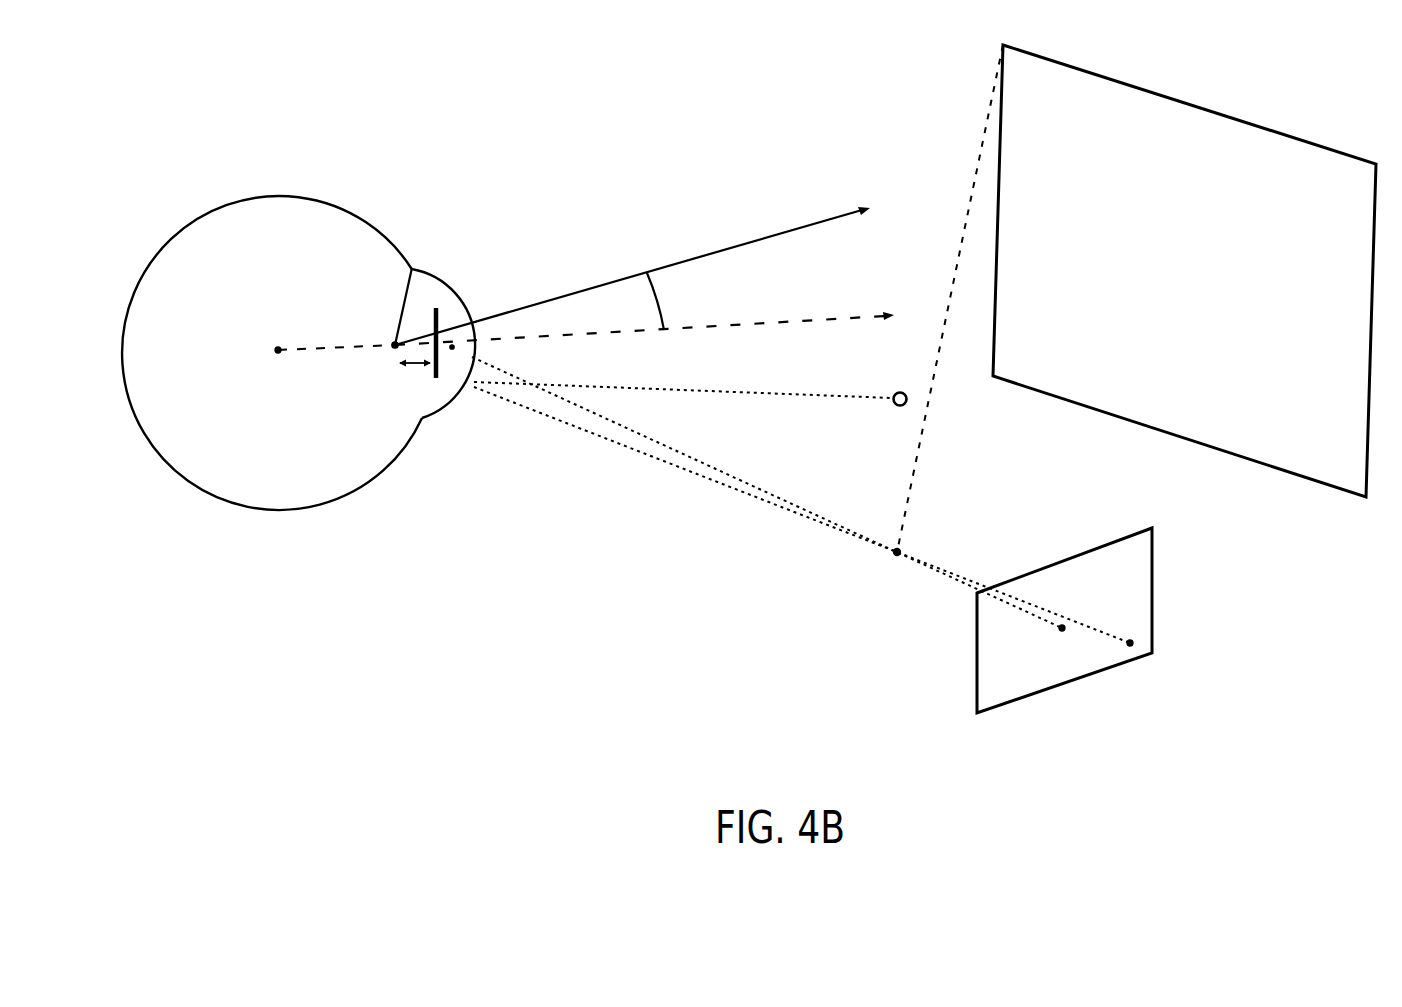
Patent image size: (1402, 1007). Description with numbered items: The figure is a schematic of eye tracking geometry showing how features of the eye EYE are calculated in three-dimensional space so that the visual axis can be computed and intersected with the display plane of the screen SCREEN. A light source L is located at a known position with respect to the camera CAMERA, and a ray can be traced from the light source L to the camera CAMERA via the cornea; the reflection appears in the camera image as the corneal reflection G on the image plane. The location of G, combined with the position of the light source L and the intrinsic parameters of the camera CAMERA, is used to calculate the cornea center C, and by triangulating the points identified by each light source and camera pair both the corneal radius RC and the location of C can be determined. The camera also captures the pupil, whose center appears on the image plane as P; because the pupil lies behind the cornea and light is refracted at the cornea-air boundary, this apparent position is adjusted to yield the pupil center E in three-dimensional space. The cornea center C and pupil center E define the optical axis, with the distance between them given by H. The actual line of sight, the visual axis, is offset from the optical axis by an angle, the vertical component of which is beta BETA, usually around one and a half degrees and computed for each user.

The eye EYE is at (272, 330).
The cornea center C is at (423, 343).
The corneal radius RC is at (388, 307).
The distance between pupil center and cornea center H is at (417, 352).
The pupil center E is at (451, 363).
The beta BETA is at (687, 301).
The light source L is at (690, 411).
The screen SCREEN is at (1136, 298).
The camera CAMERA is at (801, 500).
The pupil center on the image plane P is at (1055, 644).
The corneal reflection on the image plane G is at (1134, 627).